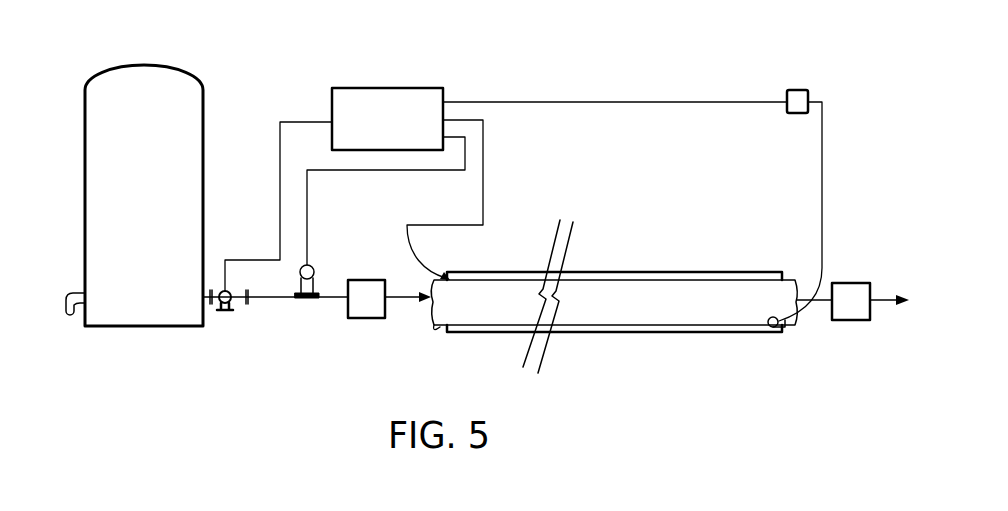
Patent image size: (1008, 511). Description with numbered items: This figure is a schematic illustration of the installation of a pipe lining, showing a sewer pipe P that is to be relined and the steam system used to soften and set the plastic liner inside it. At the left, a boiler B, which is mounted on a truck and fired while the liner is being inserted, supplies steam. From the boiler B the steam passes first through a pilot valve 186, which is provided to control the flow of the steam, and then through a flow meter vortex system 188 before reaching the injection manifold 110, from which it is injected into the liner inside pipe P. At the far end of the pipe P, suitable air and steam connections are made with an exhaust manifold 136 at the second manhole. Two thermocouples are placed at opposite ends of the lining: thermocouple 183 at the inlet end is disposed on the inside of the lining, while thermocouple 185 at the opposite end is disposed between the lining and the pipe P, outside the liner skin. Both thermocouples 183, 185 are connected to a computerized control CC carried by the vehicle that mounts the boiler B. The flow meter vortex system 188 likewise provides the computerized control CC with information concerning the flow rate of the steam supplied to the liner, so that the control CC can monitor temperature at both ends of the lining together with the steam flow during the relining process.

The boiler B is at (204, 197).
The computerized control CC is at (402, 88).
The pilot valve 186 is at (227, 314).
The flow meter vortex system 188 is at (305, 300).
The injection manifold 110 is at (376, 279).
The sewer pipe P is at (638, 277).
The thermocouple 183 is at (450, 282).
The thermocouple 185 is at (772, 331).
The exhaust manifold 136 is at (844, 283).